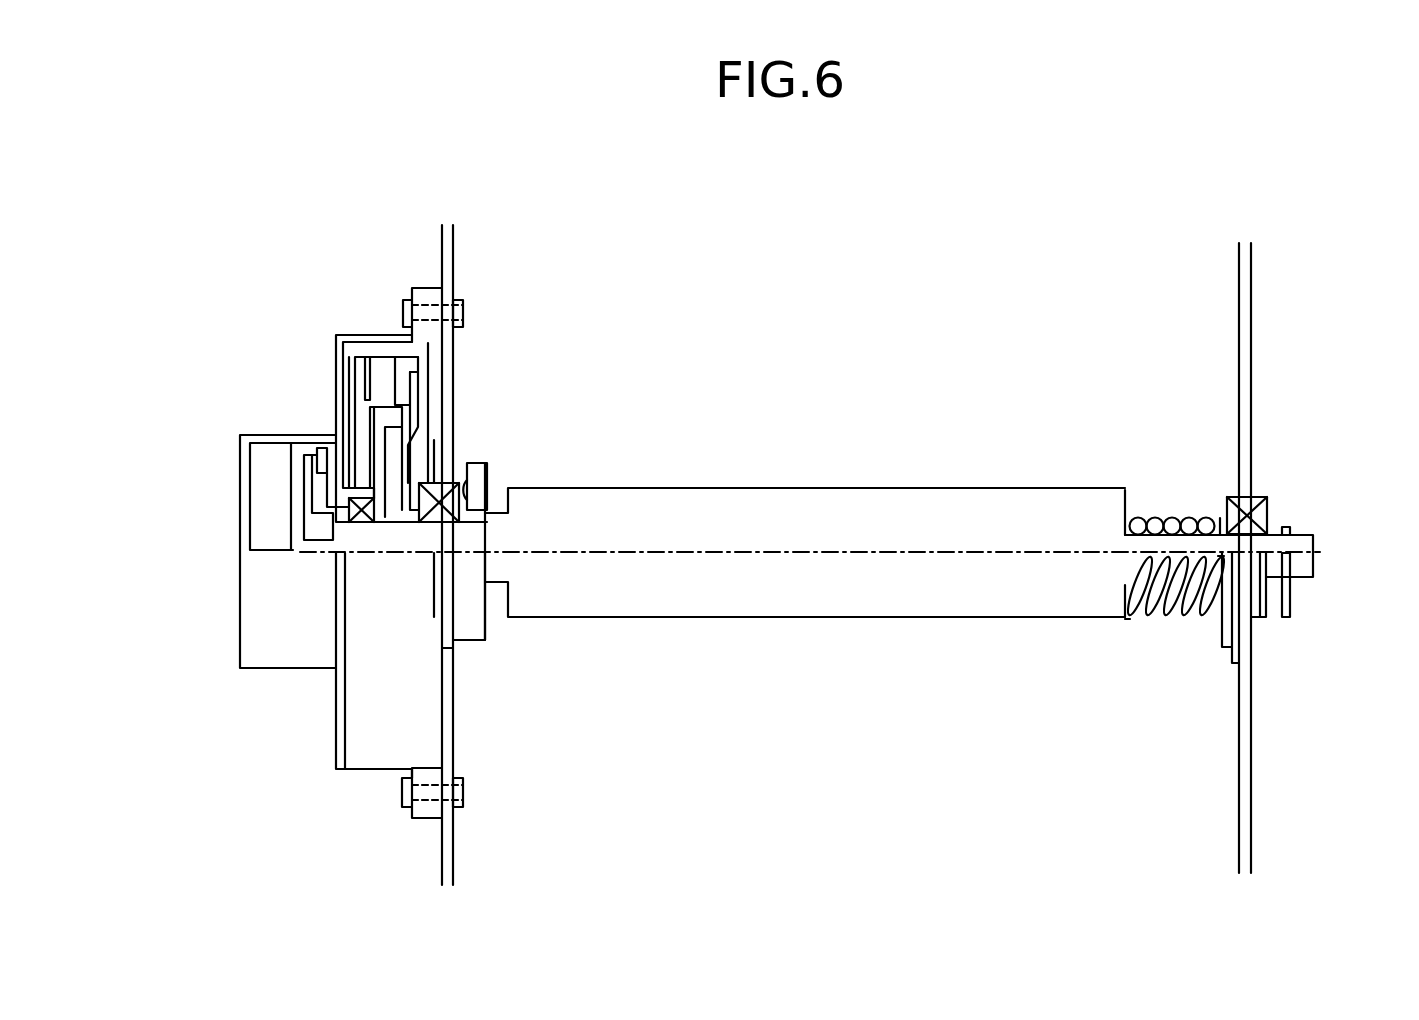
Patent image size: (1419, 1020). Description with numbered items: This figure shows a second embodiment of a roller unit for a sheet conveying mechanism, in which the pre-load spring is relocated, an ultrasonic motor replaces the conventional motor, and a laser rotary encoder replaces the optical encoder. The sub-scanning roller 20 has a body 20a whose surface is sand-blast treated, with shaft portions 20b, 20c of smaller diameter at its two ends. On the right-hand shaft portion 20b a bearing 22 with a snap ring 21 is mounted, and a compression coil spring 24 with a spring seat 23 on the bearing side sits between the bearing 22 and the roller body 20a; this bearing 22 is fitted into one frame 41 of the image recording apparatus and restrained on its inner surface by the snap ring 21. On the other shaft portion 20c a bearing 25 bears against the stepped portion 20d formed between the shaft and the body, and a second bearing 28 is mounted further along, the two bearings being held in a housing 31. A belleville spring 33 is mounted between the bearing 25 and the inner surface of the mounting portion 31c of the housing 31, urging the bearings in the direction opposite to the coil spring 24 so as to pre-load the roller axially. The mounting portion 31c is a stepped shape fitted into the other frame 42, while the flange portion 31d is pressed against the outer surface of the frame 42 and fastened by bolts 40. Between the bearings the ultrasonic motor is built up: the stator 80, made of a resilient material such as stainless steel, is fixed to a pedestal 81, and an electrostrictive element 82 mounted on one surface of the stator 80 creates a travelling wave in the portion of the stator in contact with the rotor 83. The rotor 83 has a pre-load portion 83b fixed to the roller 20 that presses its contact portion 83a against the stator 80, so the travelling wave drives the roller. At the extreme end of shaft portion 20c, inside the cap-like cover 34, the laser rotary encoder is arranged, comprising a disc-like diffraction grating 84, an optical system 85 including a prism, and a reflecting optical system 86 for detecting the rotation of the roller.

The roller 20 is at (673, 467).
The roller body 20a is at (857, 528).
The shaft portion 20b is at (1305, 548).
The shaft portion 20c is at (400, 522).
The stepped portion 20d is at (490, 520).
The snap ring 21 is at (1237, 497).
The bearing 22 is at (1265, 508).
The spring seat 23 is at (1218, 517).
The compression coil spring 24 is at (1148, 517).
The bearing 25 is at (447, 465).
The bearing 28 is at (362, 525).
The housing 31 is at (352, 331).
The mounting portion 31c is at (455, 420).
The flange portion 31d is at (425, 287).
The belleville spring 33 is at (468, 470).
The cover 34 is at (243, 502).
The bolt 40 is at (405, 300).
The frame 41 is at (1247, 358).
The frame 42 is at (456, 250).
The stator 80 is at (372, 383).
The pedestal 81 is at (343, 410).
The electrostrictive element 82 is at (372, 383).
The rotor 83 is at (393, 450).
The contact portion 83a is at (400, 365).
The pre-load portion 83b is at (450, 400).
The diffraction grating 84 is at (307, 470).
The optical system 85 is at (265, 520).
The reflecting optical system 86 is at (320, 470).